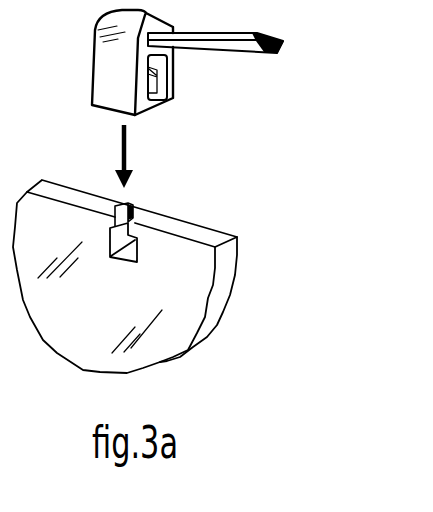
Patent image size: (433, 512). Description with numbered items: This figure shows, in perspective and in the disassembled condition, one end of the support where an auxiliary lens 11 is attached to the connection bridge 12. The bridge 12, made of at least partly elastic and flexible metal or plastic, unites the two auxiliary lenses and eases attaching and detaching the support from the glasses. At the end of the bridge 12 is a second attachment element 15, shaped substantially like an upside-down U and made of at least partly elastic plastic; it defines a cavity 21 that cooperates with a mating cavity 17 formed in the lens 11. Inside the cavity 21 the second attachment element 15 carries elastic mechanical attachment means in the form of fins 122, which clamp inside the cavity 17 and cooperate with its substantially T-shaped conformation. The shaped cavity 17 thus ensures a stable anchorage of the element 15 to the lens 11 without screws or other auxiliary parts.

The auxiliary lens 11 is at (198, 310).
The connection bridge 12 is at (265, 37).
The second attachment element 15 is at (122, 22).
The cavity 17 is at (124, 219).
The cavity 21 is at (153, 102).
The fins 122 is at (155, 80).